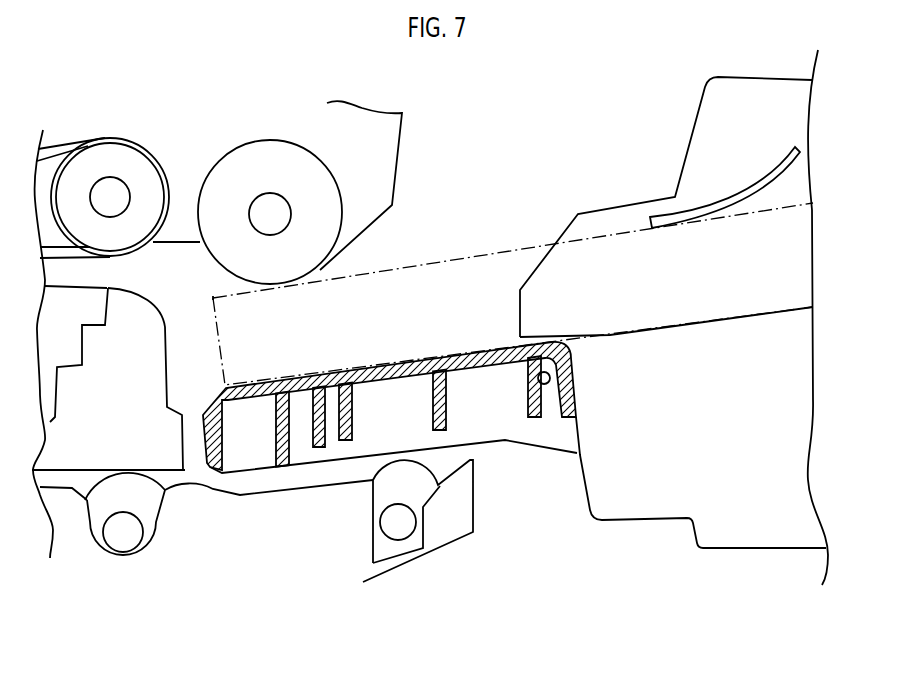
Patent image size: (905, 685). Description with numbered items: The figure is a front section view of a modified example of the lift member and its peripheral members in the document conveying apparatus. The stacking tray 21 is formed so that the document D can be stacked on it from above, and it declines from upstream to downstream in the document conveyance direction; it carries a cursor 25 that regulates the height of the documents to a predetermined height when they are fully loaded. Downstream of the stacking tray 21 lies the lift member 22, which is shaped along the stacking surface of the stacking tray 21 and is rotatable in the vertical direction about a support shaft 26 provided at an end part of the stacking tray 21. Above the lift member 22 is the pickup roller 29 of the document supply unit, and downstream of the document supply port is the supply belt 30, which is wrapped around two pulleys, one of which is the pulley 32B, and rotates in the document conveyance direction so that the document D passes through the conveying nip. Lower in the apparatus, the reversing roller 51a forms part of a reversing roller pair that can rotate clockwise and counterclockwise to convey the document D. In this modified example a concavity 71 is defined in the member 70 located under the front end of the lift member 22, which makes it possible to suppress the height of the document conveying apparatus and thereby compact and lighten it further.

The stacking tray 21 is at (670, 490).
The lift member 22 is at (495, 455).
The cursor 25 is at (703, 207).
The support shaft 26 is at (544, 384).
The pickup roller 29 is at (270, 147).
The supply belt 30 is at (147, 148).
The pulley 32B is at (112, 158).
The reversing roller 51a is at (147, 510).
The member 70 is at (323, 553).
The concavity 71 is at (283, 473).
The document D is at (435, 260).